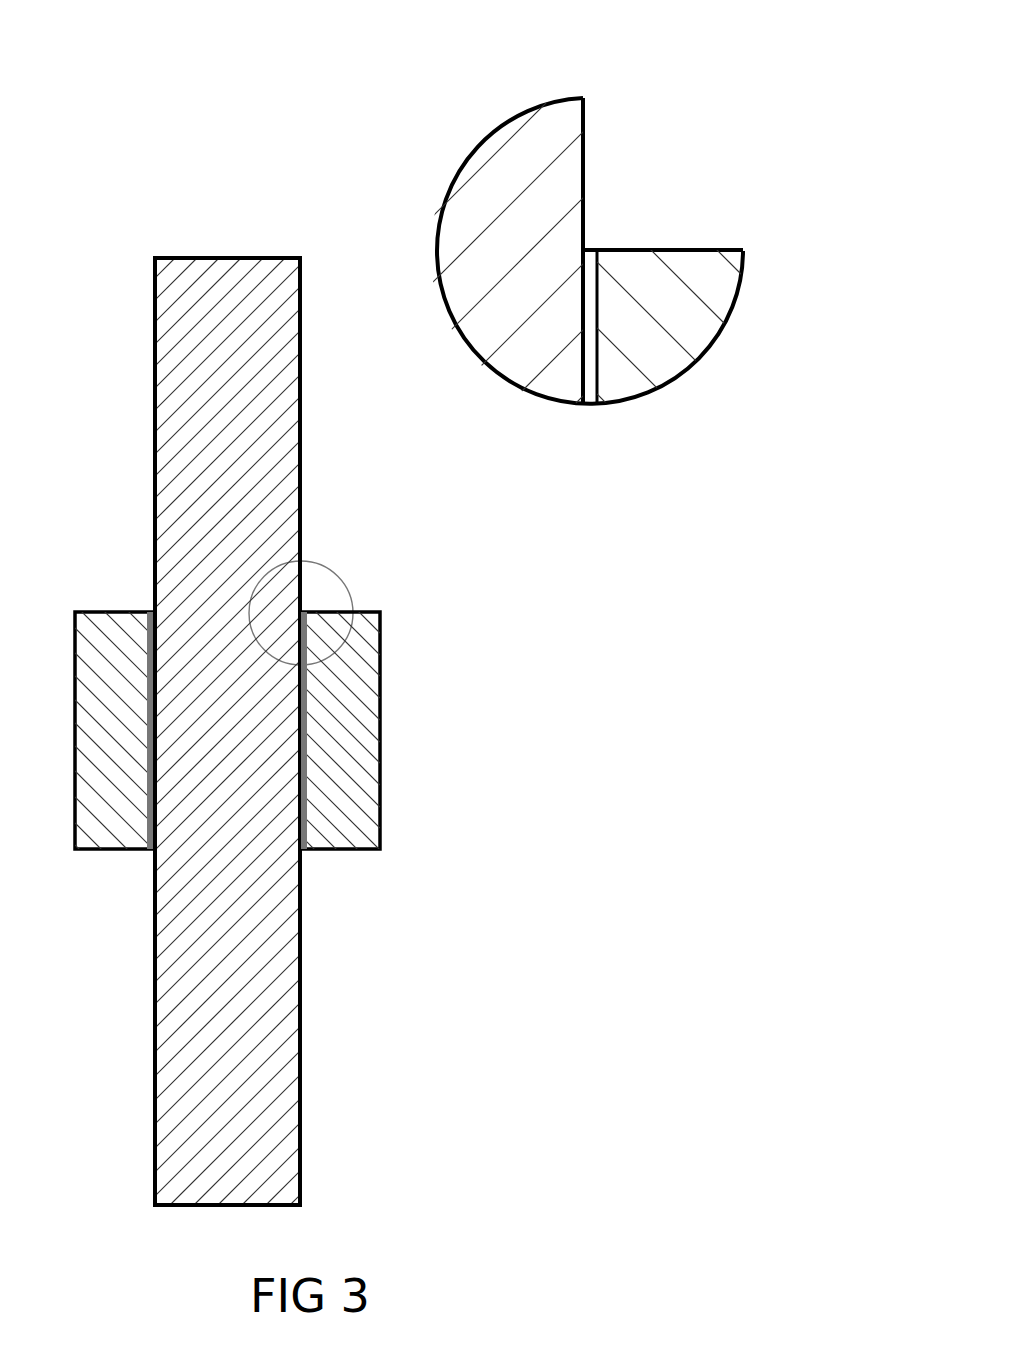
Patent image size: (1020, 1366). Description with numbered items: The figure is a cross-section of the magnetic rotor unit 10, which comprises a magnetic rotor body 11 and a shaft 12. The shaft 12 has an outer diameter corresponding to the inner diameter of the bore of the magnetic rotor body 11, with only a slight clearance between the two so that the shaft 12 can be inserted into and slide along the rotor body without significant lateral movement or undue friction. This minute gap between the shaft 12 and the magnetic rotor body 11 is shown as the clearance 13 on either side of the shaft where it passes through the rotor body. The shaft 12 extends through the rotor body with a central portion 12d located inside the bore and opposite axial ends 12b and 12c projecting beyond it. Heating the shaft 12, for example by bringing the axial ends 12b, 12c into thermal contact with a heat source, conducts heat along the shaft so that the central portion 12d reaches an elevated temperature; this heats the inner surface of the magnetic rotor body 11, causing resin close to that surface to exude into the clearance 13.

The magnetic rotor unit 10 is at (88, 320).
The magnetic rotor body 11 is at (392, 598).
The shaft 12 is at (330, 1012).
The axial end 12b is at (219, 237).
The axial end 12c is at (226, 1228).
The central portion 12d is at (448, 595).
The clearance 13 is at (152, 590).